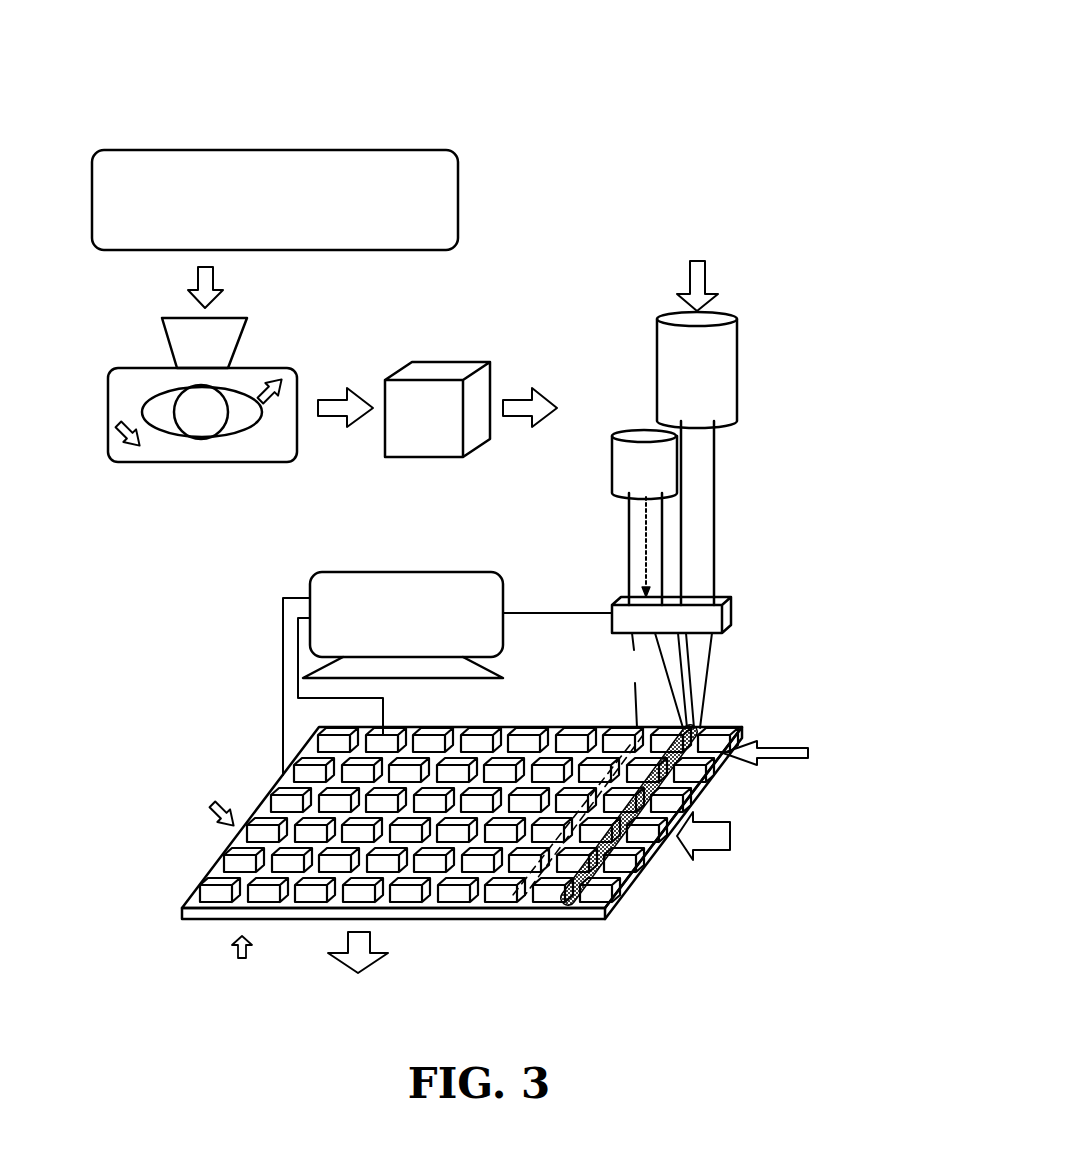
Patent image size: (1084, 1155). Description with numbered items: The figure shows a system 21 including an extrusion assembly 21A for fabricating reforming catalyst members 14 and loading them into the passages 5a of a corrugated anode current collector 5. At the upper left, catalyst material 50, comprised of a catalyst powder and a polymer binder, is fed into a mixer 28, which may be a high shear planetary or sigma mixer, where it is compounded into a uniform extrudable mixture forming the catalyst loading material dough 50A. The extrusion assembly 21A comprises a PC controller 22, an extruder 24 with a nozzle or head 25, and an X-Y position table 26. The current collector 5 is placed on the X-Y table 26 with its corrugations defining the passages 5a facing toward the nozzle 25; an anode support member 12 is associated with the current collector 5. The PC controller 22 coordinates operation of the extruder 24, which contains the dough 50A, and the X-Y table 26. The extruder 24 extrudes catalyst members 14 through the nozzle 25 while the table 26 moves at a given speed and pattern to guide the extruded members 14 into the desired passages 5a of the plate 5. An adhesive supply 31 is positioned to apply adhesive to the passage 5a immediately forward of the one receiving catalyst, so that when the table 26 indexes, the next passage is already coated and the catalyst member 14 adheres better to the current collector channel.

The system 21 is at (520, 118).
The extrusion assembly 21A is at (727, 551).
The PC controller 22 is at (415, 582).
The extruder 24 is at (729, 378).
The nozzle 25 is at (698, 642).
The X-Y position table 26 is at (565, 913).
The mixer 28 is at (253, 370).
The adhesive supply 31 is at (614, 480).
The catalyst material 50 is at (397, 237).
The catalyst loading material dough 50A is at (435, 370).
The corrugated anode current collector 5 is at (453, 733).
The passages 5a is at (542, 737).
The anode support member 12 is at (255, 898).
The reforming catalyst members 14 is at (712, 732).